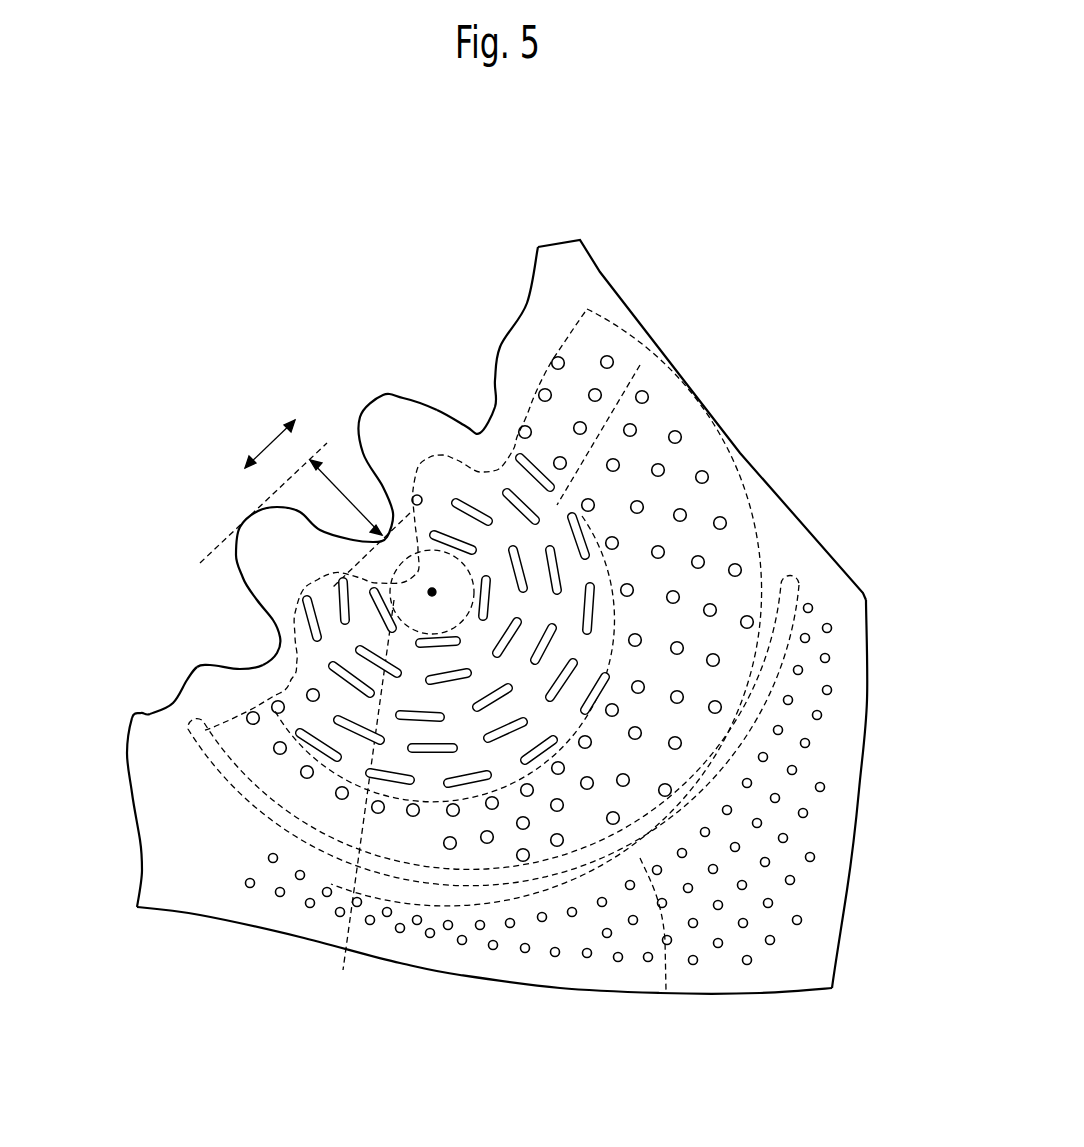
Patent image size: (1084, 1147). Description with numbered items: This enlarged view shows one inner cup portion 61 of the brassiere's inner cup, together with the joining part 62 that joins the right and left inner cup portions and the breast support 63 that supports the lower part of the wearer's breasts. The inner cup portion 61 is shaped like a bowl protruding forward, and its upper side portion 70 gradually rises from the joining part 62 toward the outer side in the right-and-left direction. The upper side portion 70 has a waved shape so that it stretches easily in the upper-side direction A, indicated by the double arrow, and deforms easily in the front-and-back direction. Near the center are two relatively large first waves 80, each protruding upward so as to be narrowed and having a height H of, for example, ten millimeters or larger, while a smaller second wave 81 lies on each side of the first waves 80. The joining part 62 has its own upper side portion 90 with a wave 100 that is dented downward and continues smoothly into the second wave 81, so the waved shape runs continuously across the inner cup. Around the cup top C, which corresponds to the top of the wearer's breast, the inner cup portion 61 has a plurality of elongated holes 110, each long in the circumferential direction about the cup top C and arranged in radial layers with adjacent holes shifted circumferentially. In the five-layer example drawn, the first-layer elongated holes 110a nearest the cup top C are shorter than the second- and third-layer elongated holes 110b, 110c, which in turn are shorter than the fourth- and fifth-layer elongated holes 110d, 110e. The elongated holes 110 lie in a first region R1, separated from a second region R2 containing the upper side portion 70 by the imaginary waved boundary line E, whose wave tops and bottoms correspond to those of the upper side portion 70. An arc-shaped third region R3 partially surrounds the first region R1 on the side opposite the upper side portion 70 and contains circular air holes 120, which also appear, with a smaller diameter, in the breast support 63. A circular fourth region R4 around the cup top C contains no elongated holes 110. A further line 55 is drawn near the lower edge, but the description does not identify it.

The boundary line 55 is at (666, 990).
The inner cup portion 61 is at (636, 347).
The joining part 62 is at (153, 892).
The breast support 63 is at (425, 948).
The upper side portion 70 is at (354, 408).
The first waves 80 is at (302, 475).
The second waves 81 is at (197, 665).
The upper side portion 90 is at (133, 714).
The wave 100 is at (150, 715).
The elongated holes 110 is at (497, 666).
The first-layer elongated holes 110a is at (456, 641).
The second-layer elongated holes 110b is at (467, 673).
The third-layer elongated holes 110c is at (508, 688).
The fourth-layer elongated holes 110d is at (523, 722).
The fifth-layer elongated holes 110e is at (553, 740).
The air holes 120 is at (487, 843).
The cup top C is at (432, 590).
The boundary line E is at (457, 455).
The first region R1 is at (680, 385).
The second region R2 is at (405, 432).
The third region R3 is at (752, 527).
The fourth region R4 is at (347, 805).
The height H is at (305, 515).
The upper-side direction A is at (270, 440).